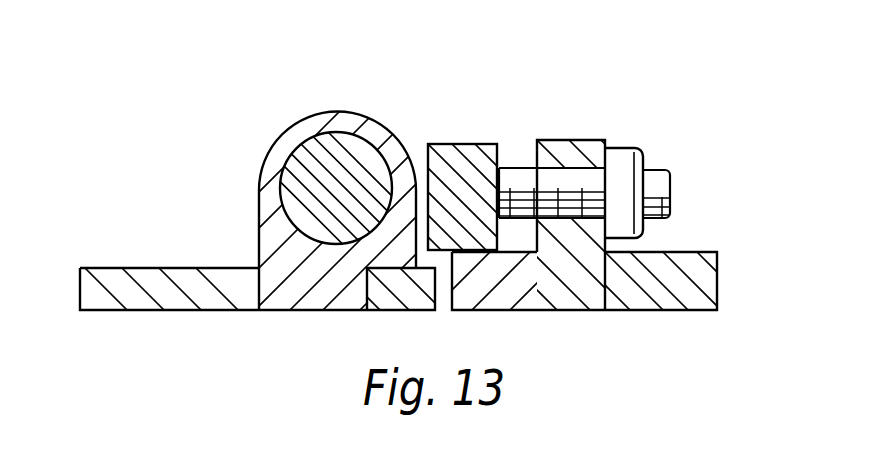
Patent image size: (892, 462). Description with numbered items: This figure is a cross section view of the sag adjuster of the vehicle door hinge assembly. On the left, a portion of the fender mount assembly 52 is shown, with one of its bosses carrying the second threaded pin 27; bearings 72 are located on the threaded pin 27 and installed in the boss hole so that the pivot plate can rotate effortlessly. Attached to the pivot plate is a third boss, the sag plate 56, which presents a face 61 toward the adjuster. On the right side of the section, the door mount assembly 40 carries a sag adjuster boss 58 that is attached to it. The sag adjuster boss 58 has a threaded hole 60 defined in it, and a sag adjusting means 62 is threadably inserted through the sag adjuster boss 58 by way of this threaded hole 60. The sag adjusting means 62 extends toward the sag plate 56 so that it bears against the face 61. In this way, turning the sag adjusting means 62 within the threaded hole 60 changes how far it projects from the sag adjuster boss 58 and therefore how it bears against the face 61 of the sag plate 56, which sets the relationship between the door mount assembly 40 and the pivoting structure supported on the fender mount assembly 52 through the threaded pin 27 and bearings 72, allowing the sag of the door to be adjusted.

The fender mount assembly 52 is at (138, 267).
The second threaded pin 27 is at (348, 159).
The bearings 72 is at (345, 158).
The sag plate 56 is at (452, 145).
The face 61 is at (499, 155).
The sag adjuster boss 58 is at (553, 139).
The threaded hole 60 is at (593, 139).
The sag adjusting means 62 is at (645, 163).
The door mount assembly 40 is at (718, 256).